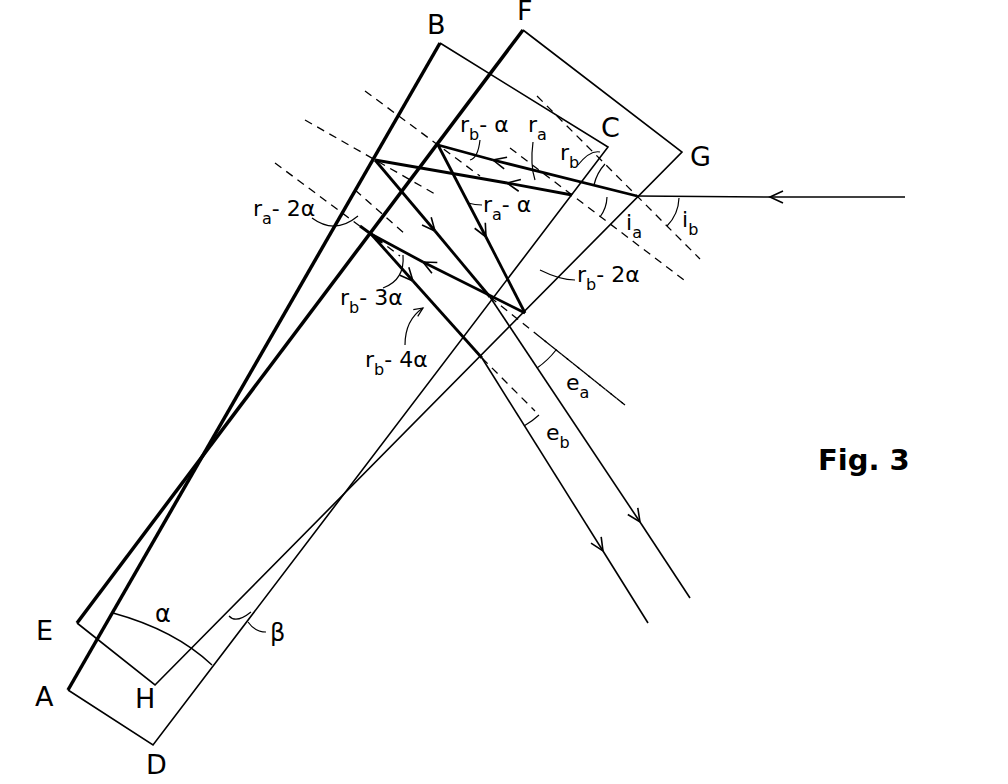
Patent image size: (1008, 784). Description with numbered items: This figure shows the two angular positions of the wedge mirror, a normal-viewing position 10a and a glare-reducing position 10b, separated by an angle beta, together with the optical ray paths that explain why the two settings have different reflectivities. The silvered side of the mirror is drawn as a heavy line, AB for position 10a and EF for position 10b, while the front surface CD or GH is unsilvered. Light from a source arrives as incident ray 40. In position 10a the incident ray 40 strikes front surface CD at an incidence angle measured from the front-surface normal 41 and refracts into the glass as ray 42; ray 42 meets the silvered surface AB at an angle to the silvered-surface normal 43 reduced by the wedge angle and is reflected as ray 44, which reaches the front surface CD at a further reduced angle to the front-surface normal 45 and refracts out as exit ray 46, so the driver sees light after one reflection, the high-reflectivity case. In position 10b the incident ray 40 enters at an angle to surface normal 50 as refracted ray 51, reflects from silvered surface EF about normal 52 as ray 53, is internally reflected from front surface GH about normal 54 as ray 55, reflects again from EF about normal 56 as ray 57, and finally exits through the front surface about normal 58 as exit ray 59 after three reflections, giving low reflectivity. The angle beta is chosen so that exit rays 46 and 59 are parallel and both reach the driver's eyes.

The mirror position for normal viewing 10a is at (181, 707).
The mirror position for glare conditions 10b is at (112, 577).
The incident ray 40 is at (825, 198).
The front-surface normal 41 is at (678, 288).
The refracted ray 42 is at (482, 229).
The silvered-surface normal 43 is at (340, 120).
The reflected ray 44 is at (373, 158).
The front-surface normal 45 is at (600, 385).
The exit ray 46 is at (617, 488).
The surface normal 50 is at (698, 258).
The refracted ray 51 is at (617, 183).
The silvered-surface normal 52 is at (380, 100).
The reflected ray 53 is at (432, 142).
The front-surface normal 54 is at (547, 337).
The reflected ray 55 is at (461, 276).
The silvered-surface normal 56 is at (293, 170).
The reflected ray 57 is at (370, 236).
The front-surface normal 58 is at (520, 404).
The exit ray 59 is at (584, 528).